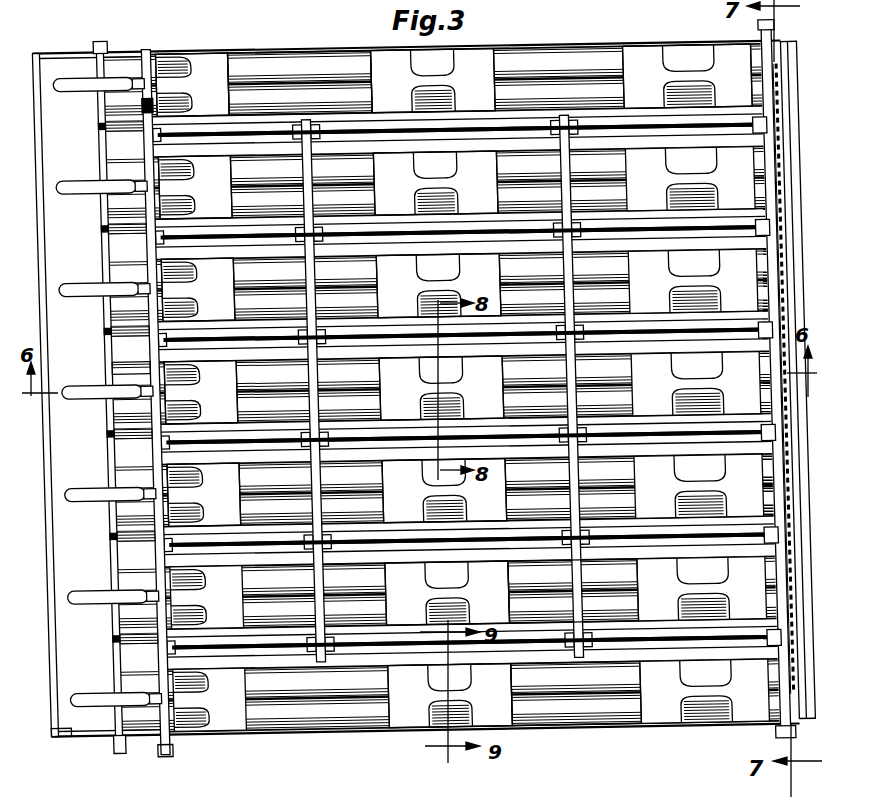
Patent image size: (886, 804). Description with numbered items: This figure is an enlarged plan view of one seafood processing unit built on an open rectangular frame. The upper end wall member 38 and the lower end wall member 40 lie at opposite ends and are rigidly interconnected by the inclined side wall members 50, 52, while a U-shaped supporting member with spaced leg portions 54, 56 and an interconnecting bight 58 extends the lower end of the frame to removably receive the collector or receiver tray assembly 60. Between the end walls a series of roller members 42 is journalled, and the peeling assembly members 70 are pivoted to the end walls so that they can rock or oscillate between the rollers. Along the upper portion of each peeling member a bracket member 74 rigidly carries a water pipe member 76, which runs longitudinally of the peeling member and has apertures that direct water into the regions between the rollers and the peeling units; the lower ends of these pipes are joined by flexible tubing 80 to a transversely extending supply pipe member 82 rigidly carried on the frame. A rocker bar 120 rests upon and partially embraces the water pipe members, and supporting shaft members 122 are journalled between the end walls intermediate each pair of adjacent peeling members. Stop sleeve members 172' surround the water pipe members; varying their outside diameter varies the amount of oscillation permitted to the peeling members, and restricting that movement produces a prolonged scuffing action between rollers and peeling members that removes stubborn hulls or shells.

The upper end wall member 38 is at (733, 406).
The lower end wall member 40 is at (110, 368).
The roller members 42 is at (119, 125).
The inclined side wall member 50 is at (133, 54).
The inclined side wall member 52 is at (146, 745).
The leg portion 54 is at (95, 54).
The leg portion 56 is at (110, 740).
The interconnecting bight 58 is at (50, 461).
The collector or receiver tray assembly 60 is at (70, 720).
The peeling assembly members 70 is at (266, 66).
The bracket member 74 is at (207, 63).
The water pipe members 76 is at (311, 85).
The flexible tubing 80 is at (85, 95).
The supply pipe member 82 is at (148, 98).
The rocker bar 120 is at (304, 506).
The supporting shaft members 122 is at (471, 128).
The stop sleeve members 172' is at (731, 333).